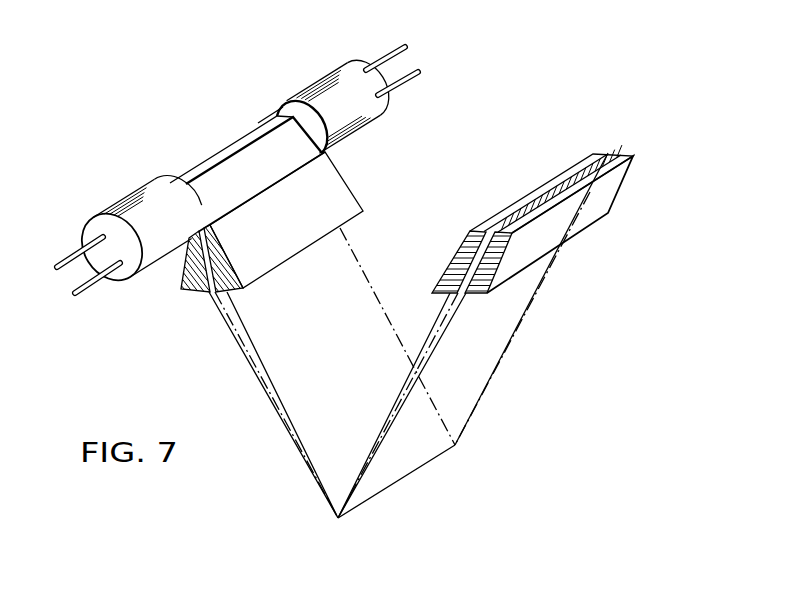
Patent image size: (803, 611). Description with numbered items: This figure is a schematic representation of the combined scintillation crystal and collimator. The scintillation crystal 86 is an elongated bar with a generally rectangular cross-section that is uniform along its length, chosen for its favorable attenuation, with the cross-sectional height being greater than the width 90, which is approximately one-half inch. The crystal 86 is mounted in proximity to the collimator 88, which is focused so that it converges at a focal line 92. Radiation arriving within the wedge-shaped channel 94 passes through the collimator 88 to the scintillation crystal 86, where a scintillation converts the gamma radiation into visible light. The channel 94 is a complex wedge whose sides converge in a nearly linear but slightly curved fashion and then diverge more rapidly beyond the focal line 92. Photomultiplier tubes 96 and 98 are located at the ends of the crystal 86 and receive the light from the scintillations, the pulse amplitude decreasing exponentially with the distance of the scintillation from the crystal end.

The scintillation crystal 86 is at (262, 122).
The collimator 88 is at (207, 188).
The width 90 is at (254, 124).
The focal line 92 is at (431, 461).
The wedge-shaped channel 94 is at (243, 344).
The photomultiplier tube 96 is at (151, 259).
The photomultiplier tube 98 is at (325, 86).